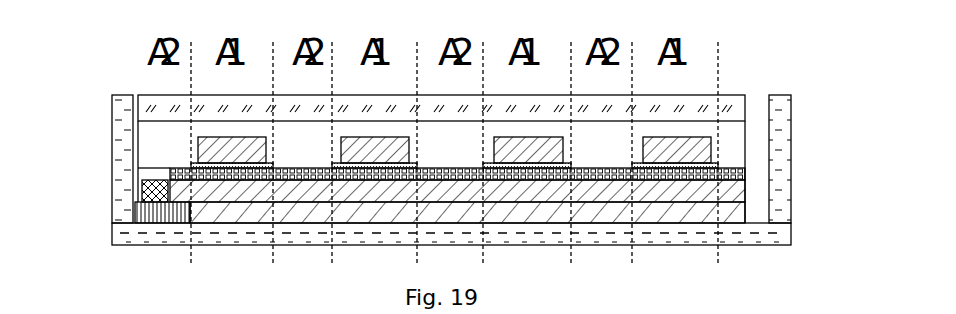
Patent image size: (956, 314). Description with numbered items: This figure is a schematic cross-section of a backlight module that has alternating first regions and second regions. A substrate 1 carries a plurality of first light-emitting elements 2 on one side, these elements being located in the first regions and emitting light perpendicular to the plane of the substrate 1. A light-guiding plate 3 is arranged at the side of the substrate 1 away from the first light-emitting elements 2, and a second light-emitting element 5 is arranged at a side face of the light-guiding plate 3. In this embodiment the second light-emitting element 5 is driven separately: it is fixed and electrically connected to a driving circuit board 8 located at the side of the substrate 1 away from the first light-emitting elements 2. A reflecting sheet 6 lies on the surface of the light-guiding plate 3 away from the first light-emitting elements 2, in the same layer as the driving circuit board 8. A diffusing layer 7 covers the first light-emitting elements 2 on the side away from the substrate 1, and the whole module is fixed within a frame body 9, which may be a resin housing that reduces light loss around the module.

The substrate 1 is at (690, 171).
The first light-emitting elements 2 is at (702, 151).
The light-guiding plate 3 is at (735, 195).
The second light-emitting element 5 is at (143, 180).
The reflecting sheet 6 is at (733, 215).
The diffusing layer 7 is at (735, 105).
The driving circuit board 8 is at (150, 215).
The frame body 9 is at (120, 130).